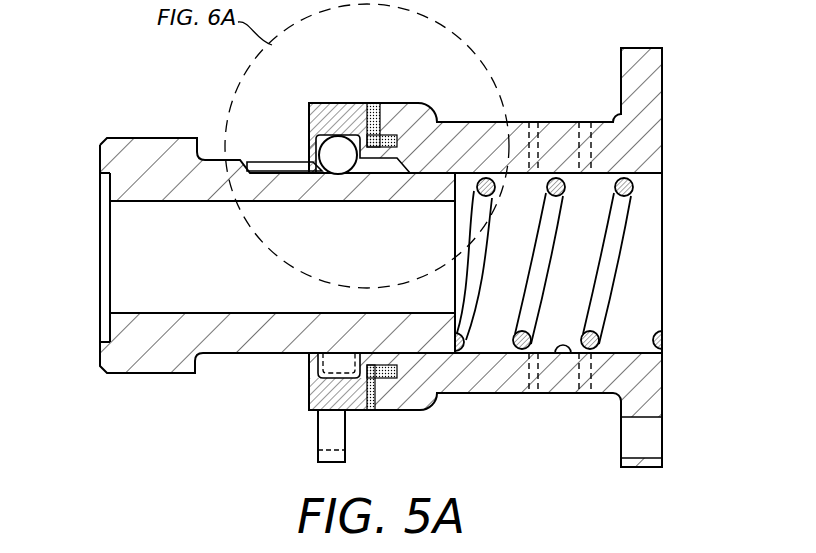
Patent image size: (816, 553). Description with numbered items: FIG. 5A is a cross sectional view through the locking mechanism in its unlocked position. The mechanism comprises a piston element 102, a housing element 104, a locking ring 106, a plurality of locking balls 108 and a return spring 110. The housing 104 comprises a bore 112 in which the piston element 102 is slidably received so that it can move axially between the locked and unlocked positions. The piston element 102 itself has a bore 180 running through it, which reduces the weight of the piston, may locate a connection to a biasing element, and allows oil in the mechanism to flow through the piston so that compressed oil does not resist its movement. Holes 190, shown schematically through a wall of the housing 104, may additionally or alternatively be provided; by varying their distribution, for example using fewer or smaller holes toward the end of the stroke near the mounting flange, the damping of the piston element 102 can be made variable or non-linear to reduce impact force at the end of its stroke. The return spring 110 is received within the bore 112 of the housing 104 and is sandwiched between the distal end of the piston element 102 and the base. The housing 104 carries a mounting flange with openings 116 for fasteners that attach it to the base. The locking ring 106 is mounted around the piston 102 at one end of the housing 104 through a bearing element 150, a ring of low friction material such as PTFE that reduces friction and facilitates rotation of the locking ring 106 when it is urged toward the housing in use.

The piston element 102 is at (143, 148).
The housing element 104 is at (490, 385).
The locking ring 106 is at (315, 395).
The locking balls 108 is at (339, 140).
The return spring 110 is at (615, 233).
The bore 112 is at (560, 350).
The openings 116 is at (652, 438).
The bearing element 150 is at (370, 410).
The bore 180 is at (132, 257).
The holes 190 is at (582, 114).